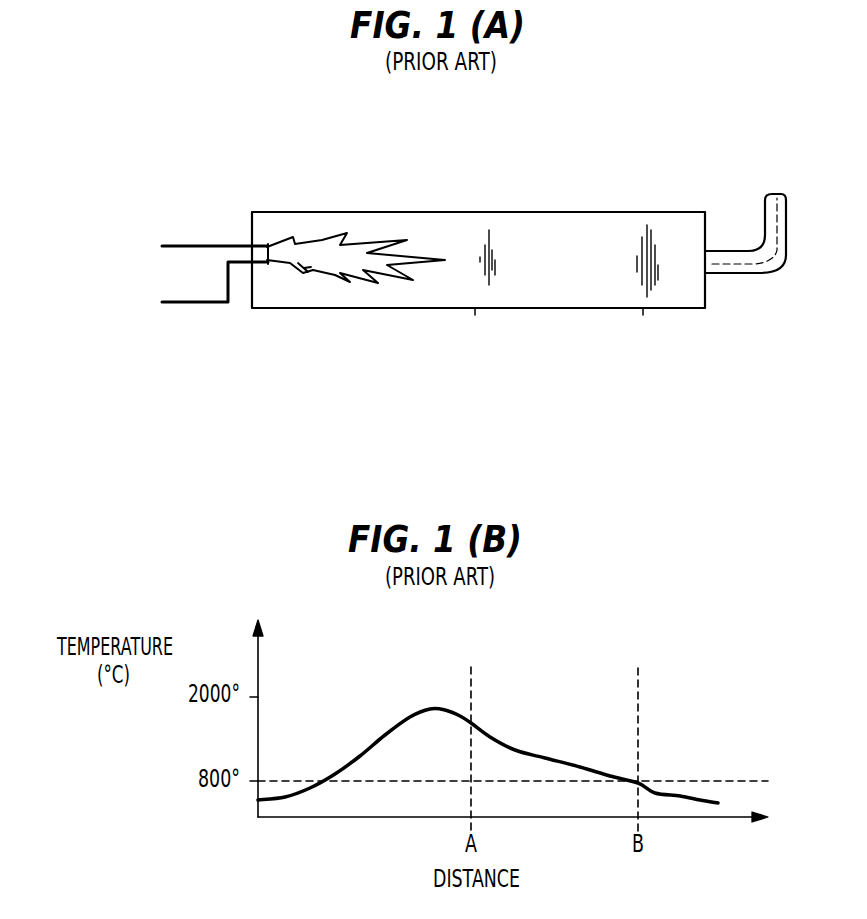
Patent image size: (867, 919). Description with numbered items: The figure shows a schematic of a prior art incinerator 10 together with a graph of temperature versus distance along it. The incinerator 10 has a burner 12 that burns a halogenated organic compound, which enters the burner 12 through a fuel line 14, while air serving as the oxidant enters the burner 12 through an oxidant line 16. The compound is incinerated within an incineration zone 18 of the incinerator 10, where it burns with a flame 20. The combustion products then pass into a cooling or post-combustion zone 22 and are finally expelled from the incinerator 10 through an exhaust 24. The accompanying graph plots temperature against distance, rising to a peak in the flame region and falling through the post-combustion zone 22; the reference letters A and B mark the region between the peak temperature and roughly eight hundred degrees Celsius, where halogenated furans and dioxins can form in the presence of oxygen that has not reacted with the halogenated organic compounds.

The incinerator 10 is at (470, 167).
The burner 12 is at (261, 245).
The fuel line 14 is at (201, 304).
The oxidant line 16 is at (208, 244).
The incineration zone 18 is at (403, 293).
The flame 20 is at (330, 244).
The post-combustion zone 22 is at (537, 296).
The exhaust 24 is at (745, 267).